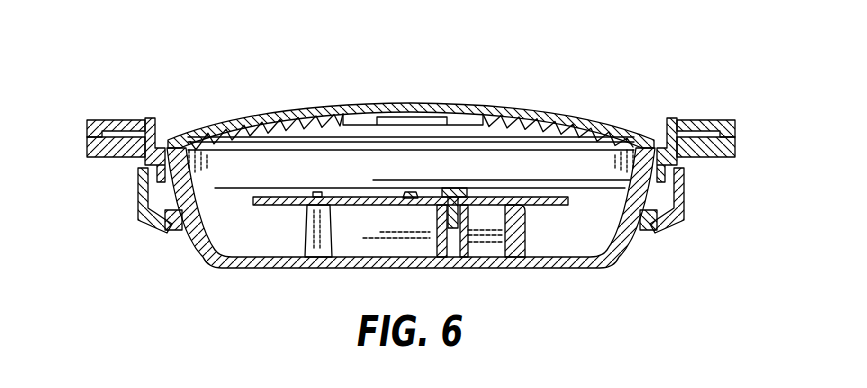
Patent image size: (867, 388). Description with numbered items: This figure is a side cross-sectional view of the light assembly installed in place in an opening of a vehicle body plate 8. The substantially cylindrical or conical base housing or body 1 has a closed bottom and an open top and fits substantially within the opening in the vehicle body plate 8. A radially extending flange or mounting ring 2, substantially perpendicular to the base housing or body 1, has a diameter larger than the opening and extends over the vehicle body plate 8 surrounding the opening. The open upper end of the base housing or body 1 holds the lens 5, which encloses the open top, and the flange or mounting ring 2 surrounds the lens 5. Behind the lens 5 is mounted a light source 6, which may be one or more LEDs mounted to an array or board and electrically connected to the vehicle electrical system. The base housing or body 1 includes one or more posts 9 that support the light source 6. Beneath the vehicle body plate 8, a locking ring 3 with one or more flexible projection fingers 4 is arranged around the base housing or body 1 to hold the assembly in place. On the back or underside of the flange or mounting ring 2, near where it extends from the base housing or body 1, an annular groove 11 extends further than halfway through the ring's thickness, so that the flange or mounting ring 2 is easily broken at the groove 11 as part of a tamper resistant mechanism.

The base housing or body 1 is at (243, 240).
The flange or mounting ring 2 is at (113, 120).
The locking ring 3 is at (168, 233).
The flexible projection fingers 4 is at (140, 195).
The lens 5 is at (290, 108).
The light source 6 is at (410, 196).
The vehicle body plate 8 is at (110, 157).
The posts 9 is at (308, 233).
The groove 11 is at (141, 121).